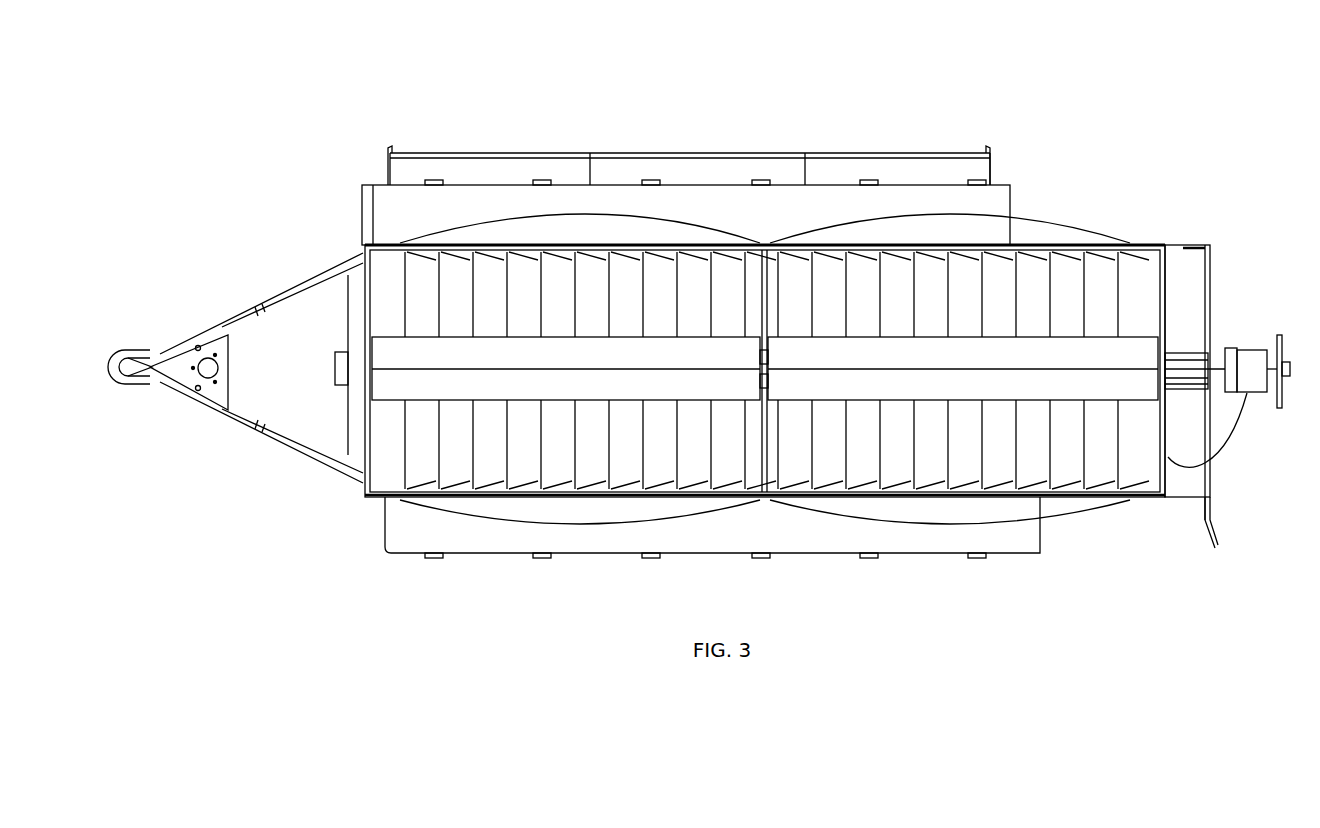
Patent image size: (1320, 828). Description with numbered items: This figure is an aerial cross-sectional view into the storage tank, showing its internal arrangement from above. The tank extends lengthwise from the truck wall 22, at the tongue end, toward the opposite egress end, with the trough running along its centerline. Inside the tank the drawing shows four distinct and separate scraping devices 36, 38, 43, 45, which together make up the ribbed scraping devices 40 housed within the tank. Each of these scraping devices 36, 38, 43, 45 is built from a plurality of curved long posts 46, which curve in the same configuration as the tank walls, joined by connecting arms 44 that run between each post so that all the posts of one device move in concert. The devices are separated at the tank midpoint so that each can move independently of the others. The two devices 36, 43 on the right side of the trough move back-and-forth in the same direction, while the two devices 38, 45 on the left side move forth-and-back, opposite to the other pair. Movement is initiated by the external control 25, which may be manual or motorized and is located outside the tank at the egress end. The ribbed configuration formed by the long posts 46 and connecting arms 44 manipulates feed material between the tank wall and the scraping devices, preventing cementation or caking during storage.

The truck wall 22 is at (358, 270).
The external control 25 is at (1215, 548).
The scraping device 36 is at (593, 215).
The scraping device 38 is at (960, 218).
The ribbed scraping device 40 is at (1183, 247).
The scraping device 43 is at (573, 524).
The connecting arms 44 is at (432, 252).
The scraping device 45 is at (948, 524).
The long posts 46 is at (477, 285).